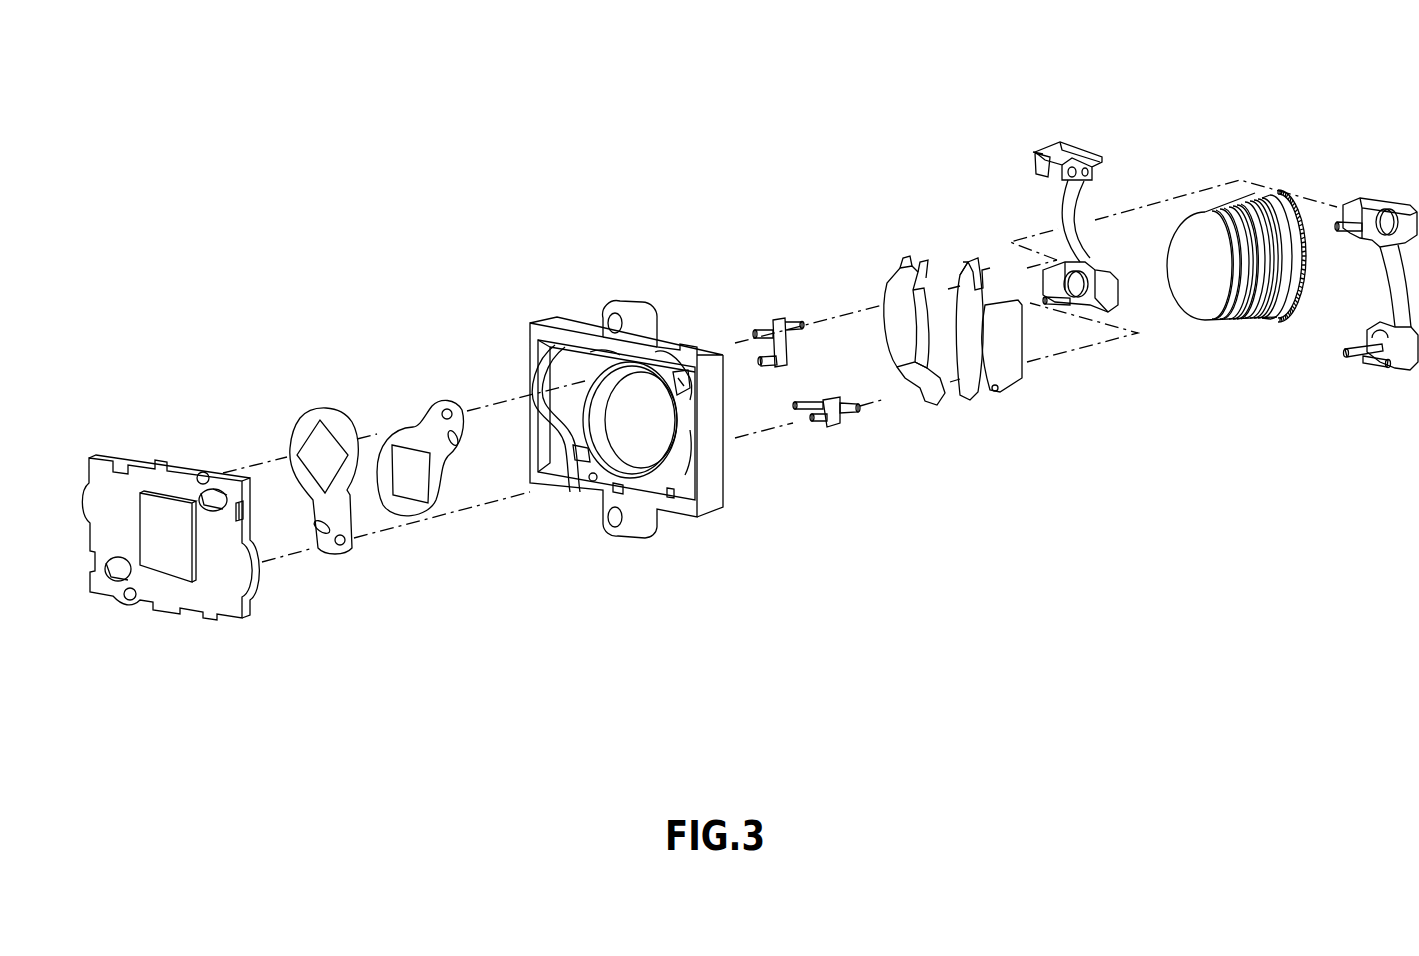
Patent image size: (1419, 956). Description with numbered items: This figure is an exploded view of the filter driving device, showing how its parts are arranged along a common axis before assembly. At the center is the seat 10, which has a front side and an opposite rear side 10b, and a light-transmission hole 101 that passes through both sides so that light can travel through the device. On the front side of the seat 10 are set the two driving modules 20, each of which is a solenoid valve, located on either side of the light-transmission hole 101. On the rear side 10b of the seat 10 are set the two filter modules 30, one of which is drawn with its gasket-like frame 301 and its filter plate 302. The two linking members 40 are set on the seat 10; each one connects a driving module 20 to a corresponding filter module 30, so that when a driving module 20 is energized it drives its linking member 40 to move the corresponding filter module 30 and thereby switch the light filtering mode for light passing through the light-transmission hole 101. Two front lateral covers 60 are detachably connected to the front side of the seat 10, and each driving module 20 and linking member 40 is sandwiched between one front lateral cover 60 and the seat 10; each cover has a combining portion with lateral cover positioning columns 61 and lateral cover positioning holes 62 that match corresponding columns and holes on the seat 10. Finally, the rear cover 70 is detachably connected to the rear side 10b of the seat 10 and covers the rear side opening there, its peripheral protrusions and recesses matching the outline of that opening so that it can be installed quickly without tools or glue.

The seat 10 is at (602, 337).
The rear side 10b is at (615, 363).
The light-transmission hole 101 is at (648, 413).
The driving modules 20 is at (918, 389).
The filter modules 30 is at (331, 554).
The first gasket of member 31 301 is at (378, 433).
The filter plate of member 31 302 is at (417, 462).
The linking members 40 is at (789, 314).
The front lateral covers 60 is at (1176, 193).
The lateral cover positioning columns 61 is at (1346, 353).
The lateral cover positioning holes 62 is at (1033, 153).
The rear cover 70 is at (113, 451).